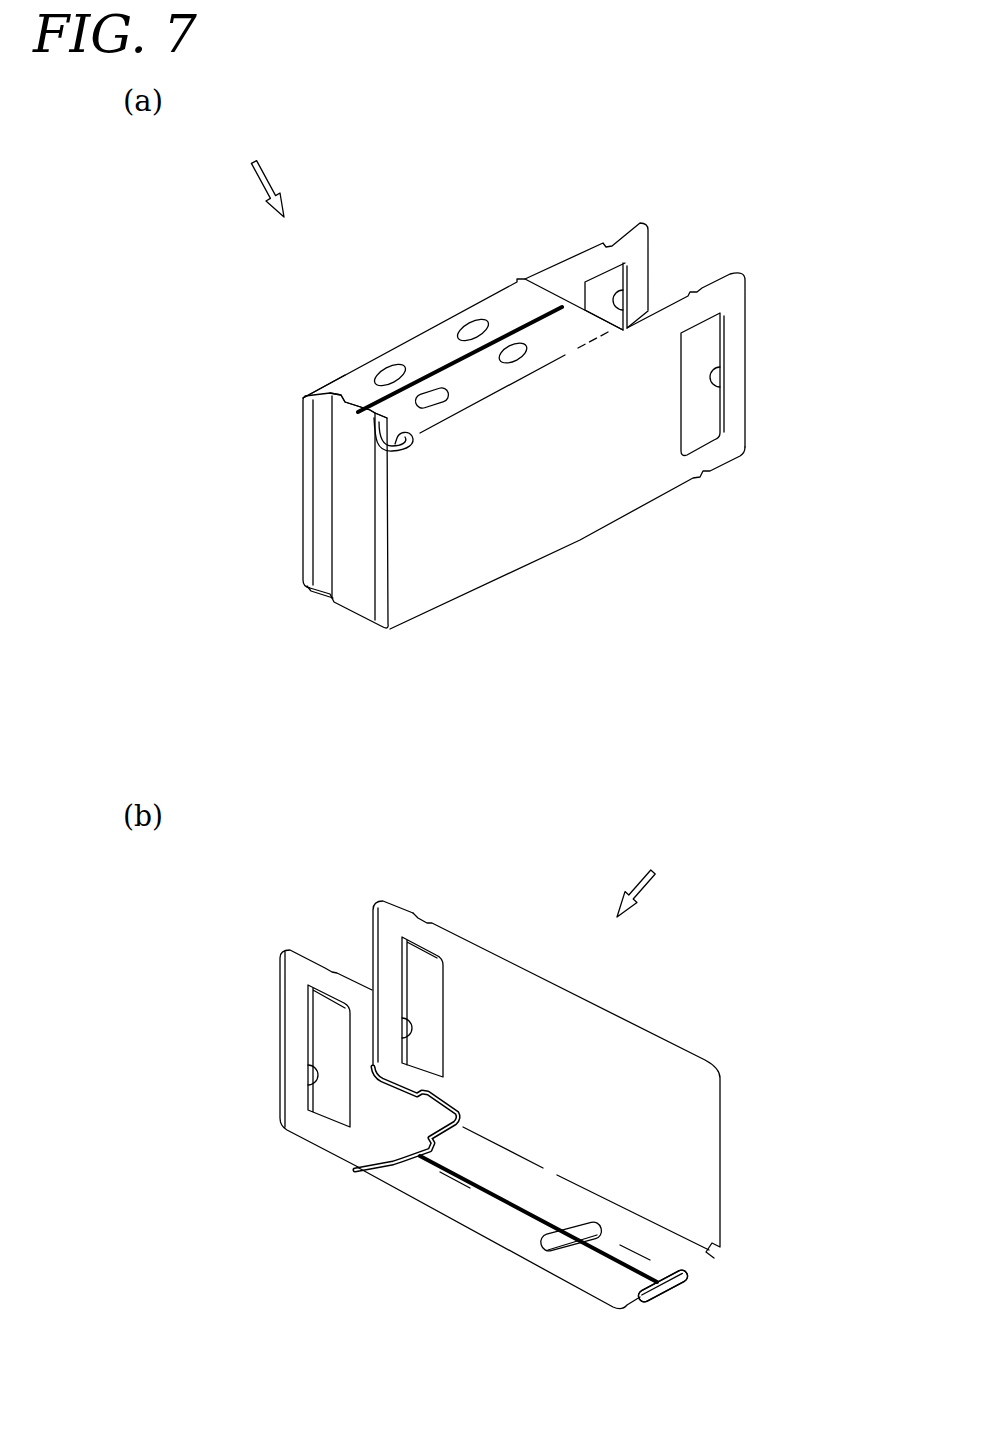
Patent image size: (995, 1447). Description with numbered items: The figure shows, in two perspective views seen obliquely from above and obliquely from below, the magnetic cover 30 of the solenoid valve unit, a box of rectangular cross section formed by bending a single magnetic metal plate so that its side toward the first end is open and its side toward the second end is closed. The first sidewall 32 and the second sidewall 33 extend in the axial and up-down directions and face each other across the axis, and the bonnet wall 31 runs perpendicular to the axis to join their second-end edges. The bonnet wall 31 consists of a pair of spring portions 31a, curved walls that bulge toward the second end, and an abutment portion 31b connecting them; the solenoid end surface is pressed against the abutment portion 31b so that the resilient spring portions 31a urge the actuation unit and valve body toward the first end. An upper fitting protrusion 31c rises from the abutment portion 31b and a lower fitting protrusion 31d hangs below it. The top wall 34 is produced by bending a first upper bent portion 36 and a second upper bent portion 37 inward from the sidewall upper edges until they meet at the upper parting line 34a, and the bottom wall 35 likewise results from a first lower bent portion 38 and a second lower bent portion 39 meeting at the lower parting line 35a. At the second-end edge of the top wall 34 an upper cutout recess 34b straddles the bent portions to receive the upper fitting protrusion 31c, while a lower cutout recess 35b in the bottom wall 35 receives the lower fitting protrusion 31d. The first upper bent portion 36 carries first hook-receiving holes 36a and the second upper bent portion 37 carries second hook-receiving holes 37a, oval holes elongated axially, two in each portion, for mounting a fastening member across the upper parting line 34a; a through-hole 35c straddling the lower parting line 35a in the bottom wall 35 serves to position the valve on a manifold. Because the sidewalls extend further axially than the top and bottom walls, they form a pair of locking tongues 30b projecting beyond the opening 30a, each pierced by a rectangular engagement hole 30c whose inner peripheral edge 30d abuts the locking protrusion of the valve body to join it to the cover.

The magnetic cover 30 is at (462, 520).
The opening 30a is at (566, 294).
The locking tongues 30b is at (622, 224).
The engagement hole 30c is at (607, 277).
The inner peripheral edge 30d is at (613, 300).
The bonnet wall 31 is at (338, 522).
The spring portions 31a is at (307, 563).
The abutment portion 31b is at (342, 487).
The upper fitting protrusion 31c is at (337, 403).
The lower fitting protrusion 31d is at (350, 610).
The first sidewall 32 is at (615, 463).
The second sidewall 33 is at (612, 1045).
The top wall 34 is at (435, 328).
The upper parting line 34a is at (510, 332).
The upper cutout recess 34b is at (373, 415).
The bottom wall 35 is at (491, 1213).
The lower parting line 35a is at (447, 1175).
The lower cutout recess 35b is at (627, 1288).
The through-hole 35c is at (600, 1225).
The first upper bent portion 36 is at (467, 373).
The first hook-receiving holes 36a is at (447, 403).
The second upper bent portion 37 is at (343, 390).
The second hook-receiving holes 37a is at (390, 377).
The first lower bent portion 38 is at (520, 1243).
The second lower bent portion 39 is at (645, 1248).